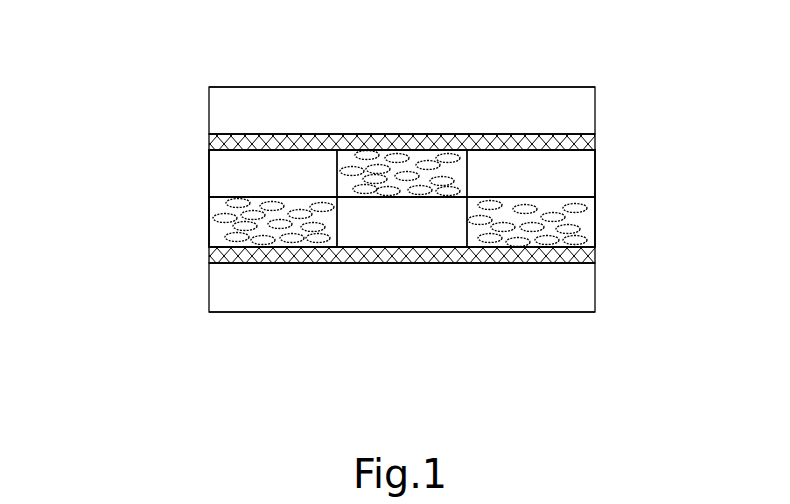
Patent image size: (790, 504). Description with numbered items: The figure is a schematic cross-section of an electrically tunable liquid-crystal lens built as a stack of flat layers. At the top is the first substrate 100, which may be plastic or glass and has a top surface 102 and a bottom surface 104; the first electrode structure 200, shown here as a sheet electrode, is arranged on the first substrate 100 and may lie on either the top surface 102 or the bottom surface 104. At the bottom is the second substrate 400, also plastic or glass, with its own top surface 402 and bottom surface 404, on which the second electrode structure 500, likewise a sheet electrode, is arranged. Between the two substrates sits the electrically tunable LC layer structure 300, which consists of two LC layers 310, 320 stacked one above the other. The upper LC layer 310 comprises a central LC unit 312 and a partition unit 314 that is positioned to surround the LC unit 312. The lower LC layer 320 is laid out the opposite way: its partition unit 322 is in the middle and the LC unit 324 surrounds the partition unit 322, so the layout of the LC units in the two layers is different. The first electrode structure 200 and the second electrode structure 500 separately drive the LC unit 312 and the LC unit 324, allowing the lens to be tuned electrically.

The first substrate 100 is at (585, 100).
The top surface of the first substrate 102 is at (293, 87).
The bottom surface of the first substrate 104 is at (230, 134).
The first electrode structure 200 is at (597, 140).
The electrically tunable LC layer structure 300 is at (95, 160).
The LC layer 310 is at (198, 175).
The LC unit 312 is at (413, 150).
The partition unit 314 is at (308, 191).
The LC layer 320 is at (198, 236).
The partition unit 322 is at (430, 239).
The LC unit 324 is at (585, 216).
The second electrode structure 500 is at (588, 258).
The second substrate 400 is at (557, 290).
The top surface of the second substrate 402 is at (252, 263).
The bottom surface of the second substrate 404 is at (357, 312).